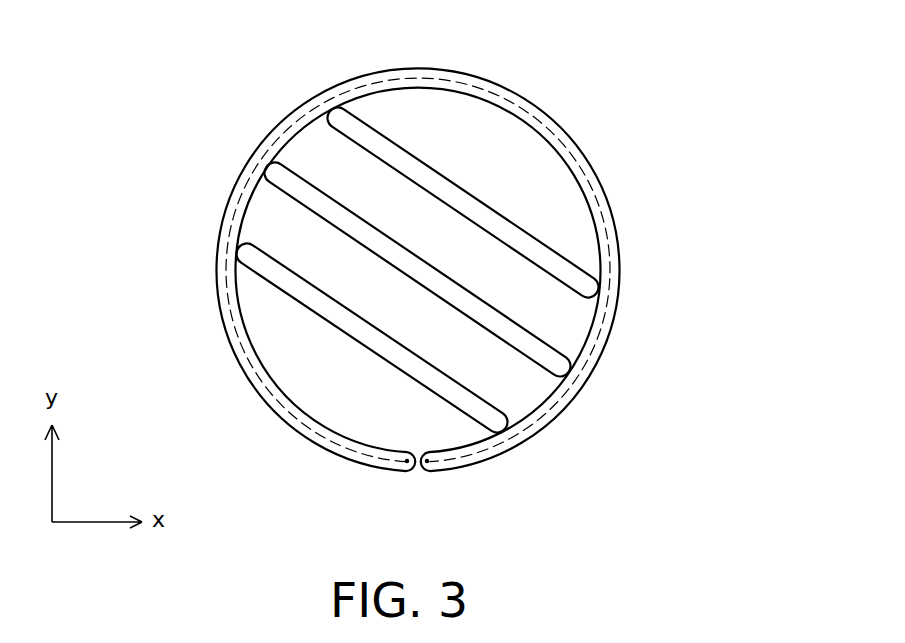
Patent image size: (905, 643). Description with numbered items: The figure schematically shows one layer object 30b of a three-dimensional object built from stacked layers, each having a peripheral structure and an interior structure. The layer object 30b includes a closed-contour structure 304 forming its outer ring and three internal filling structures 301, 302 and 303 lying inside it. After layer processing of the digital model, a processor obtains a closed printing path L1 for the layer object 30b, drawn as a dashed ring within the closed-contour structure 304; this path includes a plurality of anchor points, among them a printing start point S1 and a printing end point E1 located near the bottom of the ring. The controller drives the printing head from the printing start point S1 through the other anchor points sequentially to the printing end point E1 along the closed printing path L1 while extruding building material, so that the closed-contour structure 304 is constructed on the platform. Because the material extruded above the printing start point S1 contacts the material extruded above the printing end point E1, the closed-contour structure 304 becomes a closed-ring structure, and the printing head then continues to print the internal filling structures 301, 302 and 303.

The layer object 30b is at (445, 277).
The internal filling structure 301 is at (289, 280).
The internal filling structure 302 is at (325, 202).
The internal filling structure 303 is at (407, 160).
The closed-contour structure 304 is at (611, 218).
The closed printing path L1 is at (607, 322).
The printing start point S1 is at (407, 462).
The printing end point E1 is at (427, 462).